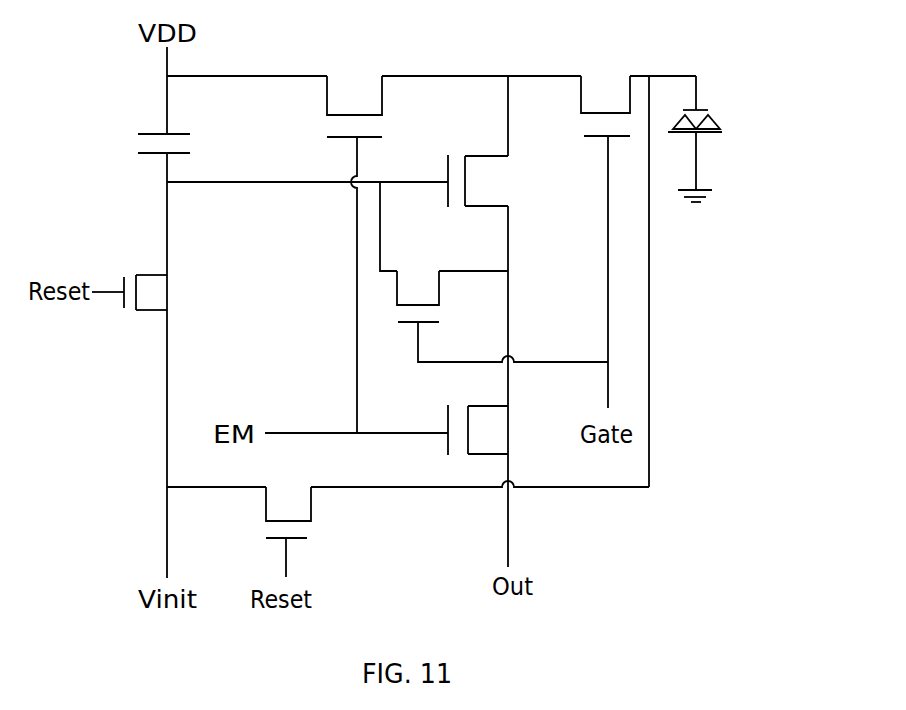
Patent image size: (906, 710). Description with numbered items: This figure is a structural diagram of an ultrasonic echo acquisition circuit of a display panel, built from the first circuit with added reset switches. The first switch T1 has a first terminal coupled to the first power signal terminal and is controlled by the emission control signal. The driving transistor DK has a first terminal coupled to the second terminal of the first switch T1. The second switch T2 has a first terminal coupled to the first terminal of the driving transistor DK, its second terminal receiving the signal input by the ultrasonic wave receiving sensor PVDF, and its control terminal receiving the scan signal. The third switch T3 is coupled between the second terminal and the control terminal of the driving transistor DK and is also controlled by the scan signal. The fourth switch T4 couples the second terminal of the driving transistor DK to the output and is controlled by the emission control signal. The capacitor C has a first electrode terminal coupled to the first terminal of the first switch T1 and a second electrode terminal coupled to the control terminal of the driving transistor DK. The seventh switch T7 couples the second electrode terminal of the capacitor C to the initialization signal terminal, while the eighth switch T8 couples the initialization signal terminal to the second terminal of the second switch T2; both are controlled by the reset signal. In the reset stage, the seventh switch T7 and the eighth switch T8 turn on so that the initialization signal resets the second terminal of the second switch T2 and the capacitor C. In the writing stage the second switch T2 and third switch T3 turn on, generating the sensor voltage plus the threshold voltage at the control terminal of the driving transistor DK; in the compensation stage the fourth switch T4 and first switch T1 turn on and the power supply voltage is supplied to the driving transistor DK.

The first switch T1 is at (354, 85).
The second switch T2 is at (605, 92).
The third switch T3 is at (436, 303).
The fourth switch T4 is at (497, 430).
The seventh switch T7 is at (149, 292).
The eighth switch T8 is at (309, 532).
The driving transistor DK is at (472, 165).
The capacitor C is at (152, 145).
The ultrasonic wave receiving sensor PVDF is at (730, 139).